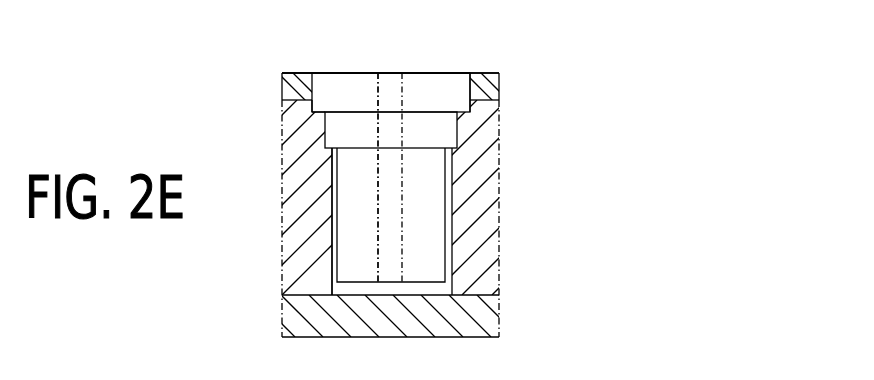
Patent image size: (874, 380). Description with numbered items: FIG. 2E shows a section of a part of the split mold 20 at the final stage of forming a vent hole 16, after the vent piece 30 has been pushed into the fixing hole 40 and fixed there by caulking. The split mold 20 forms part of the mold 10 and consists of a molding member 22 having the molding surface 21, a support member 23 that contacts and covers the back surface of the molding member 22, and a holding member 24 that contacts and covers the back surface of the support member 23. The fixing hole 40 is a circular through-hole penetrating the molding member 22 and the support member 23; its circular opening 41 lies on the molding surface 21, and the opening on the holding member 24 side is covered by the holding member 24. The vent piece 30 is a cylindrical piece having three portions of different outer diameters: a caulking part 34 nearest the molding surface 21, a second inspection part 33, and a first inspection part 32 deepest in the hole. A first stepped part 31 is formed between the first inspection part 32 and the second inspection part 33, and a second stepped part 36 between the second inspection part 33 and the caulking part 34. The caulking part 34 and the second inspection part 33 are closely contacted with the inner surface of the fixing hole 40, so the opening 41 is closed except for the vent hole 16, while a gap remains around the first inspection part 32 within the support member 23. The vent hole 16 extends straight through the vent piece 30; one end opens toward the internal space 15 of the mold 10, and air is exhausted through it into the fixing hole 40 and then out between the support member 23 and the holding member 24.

The mold 10 is at (284, 72).
The internal space 15 is at (446, 19).
The vent hole 16 is at (386, 80).
The split mold 20 is at (510, 265).
The molding surface 21 is at (485, 71).
The molding member 22 is at (495, 85).
The support member 23 is at (493, 193).
The holding member 24 is at (488, 322).
The vent piece 30 is at (359, 82).
The first stepped part 31 is at (328, 153).
The first inspection part 32 is at (433, 233).
The second inspection part 33 is at (448, 130).
The caulking part 34 is at (467, 88).
The second stepped part 36 is at (316, 111).
The fixing hole 40 is at (328, 248).
The opening 41 is at (340, 73).